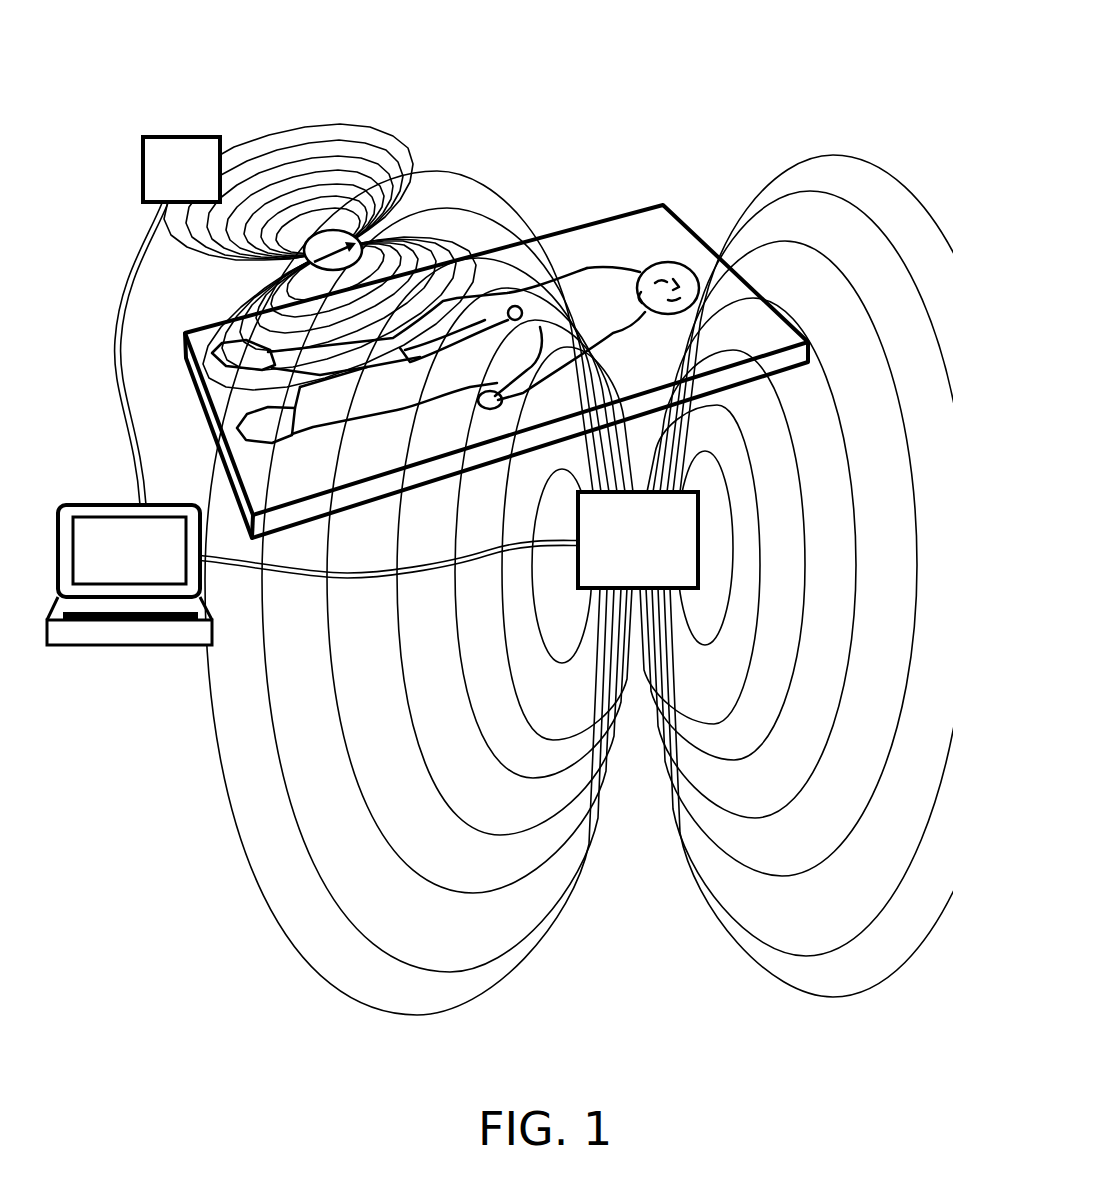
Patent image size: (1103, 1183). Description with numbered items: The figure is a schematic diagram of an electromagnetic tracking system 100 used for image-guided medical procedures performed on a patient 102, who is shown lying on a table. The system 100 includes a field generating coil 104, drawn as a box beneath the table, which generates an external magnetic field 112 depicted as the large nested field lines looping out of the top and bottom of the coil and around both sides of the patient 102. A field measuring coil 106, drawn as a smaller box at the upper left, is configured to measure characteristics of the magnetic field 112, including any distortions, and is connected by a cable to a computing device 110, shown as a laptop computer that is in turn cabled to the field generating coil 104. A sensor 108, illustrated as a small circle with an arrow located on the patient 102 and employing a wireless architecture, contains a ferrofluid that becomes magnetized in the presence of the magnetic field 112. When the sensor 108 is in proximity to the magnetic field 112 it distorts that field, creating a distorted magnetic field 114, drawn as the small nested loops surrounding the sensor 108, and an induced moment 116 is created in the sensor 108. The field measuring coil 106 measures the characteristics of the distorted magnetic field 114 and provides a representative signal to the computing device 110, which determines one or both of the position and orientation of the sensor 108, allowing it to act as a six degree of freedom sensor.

The EMT system 100 is at (740, 90).
The patient 102 is at (602, 278).
The field generating coil 104 is at (449, 540).
The field measuring coil 106 is at (167, 321).
The sensor 108 is at (357, 230).
The computing device 110 is at (104, 505).
The magnetic field 112 is at (872, 1020).
The distorted magnetic field 114 is at (395, 104).
The induced moment 116 is at (330, 240).